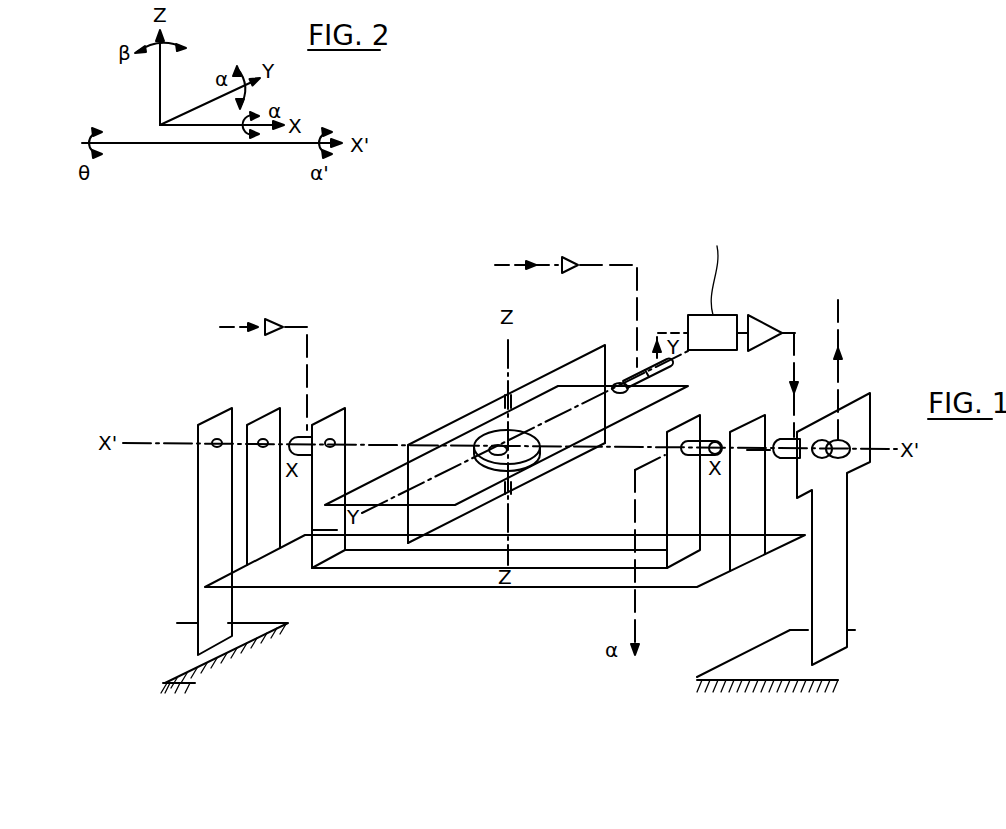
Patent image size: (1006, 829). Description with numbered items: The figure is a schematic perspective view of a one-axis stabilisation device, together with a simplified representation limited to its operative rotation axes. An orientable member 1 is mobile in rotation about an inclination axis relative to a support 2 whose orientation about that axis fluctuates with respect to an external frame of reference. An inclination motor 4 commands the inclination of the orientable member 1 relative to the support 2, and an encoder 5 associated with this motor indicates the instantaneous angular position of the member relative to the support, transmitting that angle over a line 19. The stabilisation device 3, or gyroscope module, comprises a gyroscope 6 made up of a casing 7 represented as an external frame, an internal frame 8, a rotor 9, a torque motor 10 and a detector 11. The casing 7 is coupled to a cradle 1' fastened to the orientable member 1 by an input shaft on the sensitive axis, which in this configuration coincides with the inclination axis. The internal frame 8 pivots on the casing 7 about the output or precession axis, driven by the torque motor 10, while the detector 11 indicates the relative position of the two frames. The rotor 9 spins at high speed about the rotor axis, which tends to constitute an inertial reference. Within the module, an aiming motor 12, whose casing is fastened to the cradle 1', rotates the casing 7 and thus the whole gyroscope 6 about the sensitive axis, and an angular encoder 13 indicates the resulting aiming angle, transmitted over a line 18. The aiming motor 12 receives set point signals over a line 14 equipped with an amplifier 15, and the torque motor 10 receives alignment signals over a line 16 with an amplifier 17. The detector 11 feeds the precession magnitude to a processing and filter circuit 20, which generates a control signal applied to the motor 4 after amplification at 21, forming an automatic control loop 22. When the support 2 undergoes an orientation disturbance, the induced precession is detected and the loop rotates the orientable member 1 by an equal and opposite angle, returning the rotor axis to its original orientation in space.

The orientable member 1 is at (505, 588).
The cradle 1' is at (518, 491).
The support 2 is at (272, 647).
The stabilisation device 3 is at (404, 366).
The inclination motor 4 is at (791, 465).
The encoder 5 is at (842, 439).
The gyroscope 6 is at (563, 482).
The casing 7 is at (668, 387).
The internal frame 8 is at (573, 361).
The rotor 9 is at (521, 440).
The torque motor 10 is at (627, 376).
The detector 11 is at (667, 376).
The aiming motor 12 is at (299, 432).
The angular encoder 13 is at (711, 441).
The line 14 is at (310, 337).
The amplifier 15 is at (271, 318).
The line 16 is at (629, 262).
The amplifier 17 is at (575, 260).
The line 18 is at (637, 605).
The line 19 is at (843, 330).
The processing and filter circuit 20 is at (723, 260).
The amplifier 21 is at (769, 316).
The automatic control loop 22 is at (797, 326).